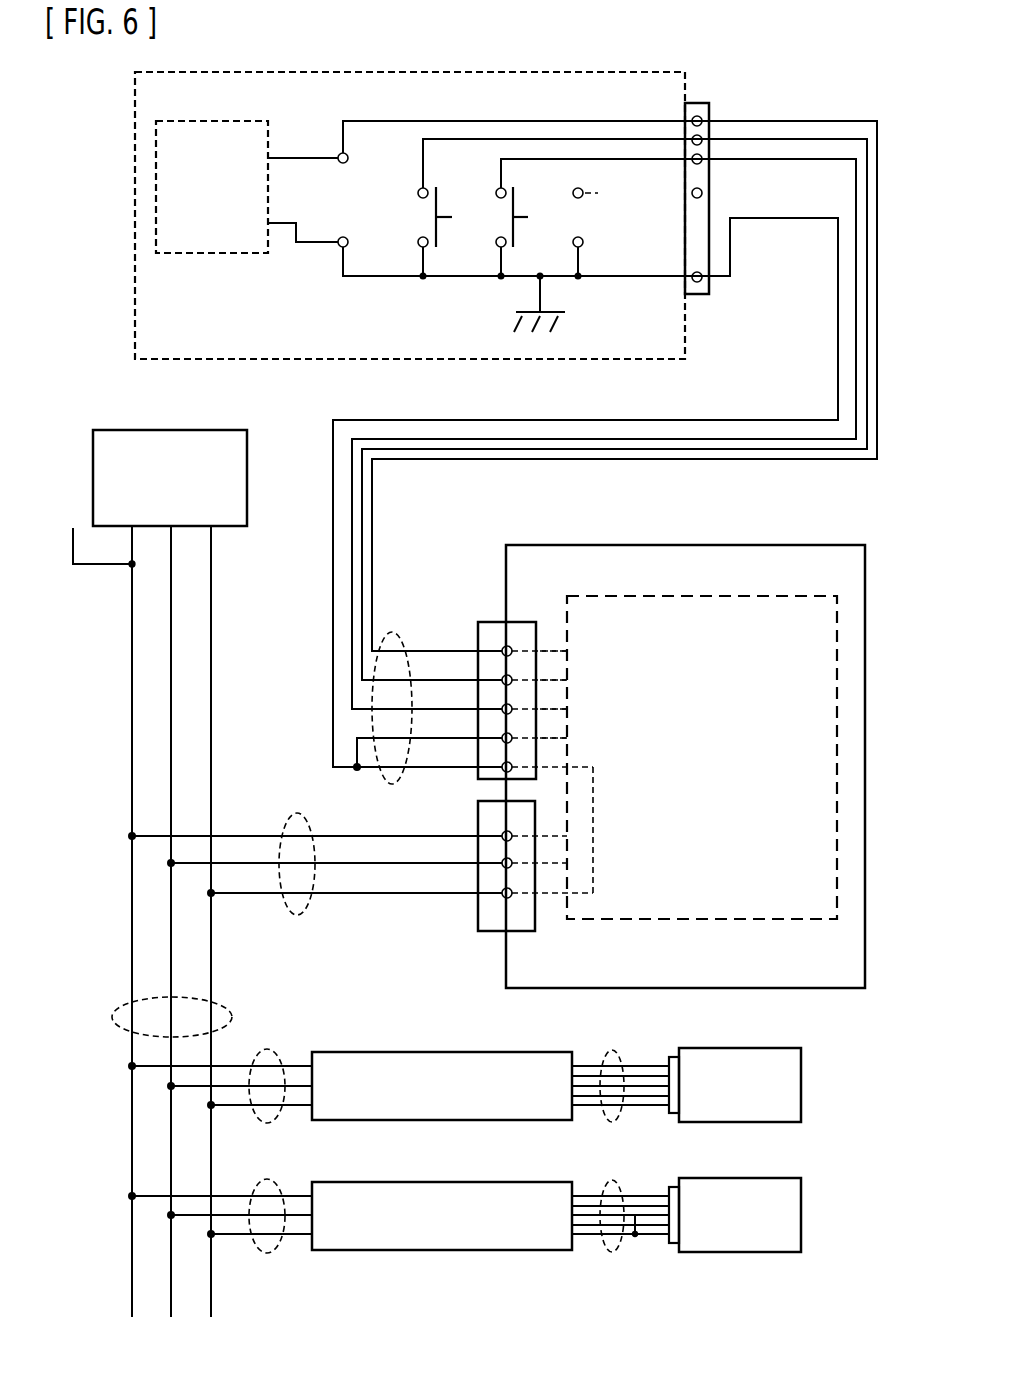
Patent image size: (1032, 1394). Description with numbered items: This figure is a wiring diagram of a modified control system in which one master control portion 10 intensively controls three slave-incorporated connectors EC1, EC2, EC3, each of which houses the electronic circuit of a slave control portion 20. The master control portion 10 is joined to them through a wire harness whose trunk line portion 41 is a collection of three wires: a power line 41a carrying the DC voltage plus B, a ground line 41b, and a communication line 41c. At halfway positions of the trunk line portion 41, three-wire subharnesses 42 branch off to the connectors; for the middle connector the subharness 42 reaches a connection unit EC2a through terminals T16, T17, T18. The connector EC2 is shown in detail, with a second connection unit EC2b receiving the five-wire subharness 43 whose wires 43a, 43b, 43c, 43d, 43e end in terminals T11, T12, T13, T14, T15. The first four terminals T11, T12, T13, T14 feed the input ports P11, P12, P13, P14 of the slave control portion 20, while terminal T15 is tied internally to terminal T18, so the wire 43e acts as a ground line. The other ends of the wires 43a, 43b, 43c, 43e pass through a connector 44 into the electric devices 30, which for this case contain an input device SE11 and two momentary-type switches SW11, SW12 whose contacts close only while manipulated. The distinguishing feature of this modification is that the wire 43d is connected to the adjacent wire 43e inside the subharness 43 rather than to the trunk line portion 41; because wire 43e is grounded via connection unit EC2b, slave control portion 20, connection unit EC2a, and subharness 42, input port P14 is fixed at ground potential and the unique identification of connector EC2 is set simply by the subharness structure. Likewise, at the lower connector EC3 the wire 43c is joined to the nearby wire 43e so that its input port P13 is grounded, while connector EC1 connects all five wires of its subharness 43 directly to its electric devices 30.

The electric devices 30 is at (628, 72).
The input device SE11 is at (242, 255).
The switch SW11 is at (421, 188).
The switch SW12 is at (499, 188).
The connector 44 is at (699, 297).
The wire 43a is at (457, 461).
The wire 43b is at (514, 450).
The wire 43c is at (570, 441).
The wire 43d is at (357, 751).
The wire 43e is at (598, 420).
The slave-incorporated connector EC2 is at (681, 545).
The slave control portion 20 is at (755, 595).
The connection unit EC2b is at (522, 622).
The terminal T11 is at (502, 651).
The terminal T12 is at (502, 680).
The terminal T13 is at (502, 709).
The terminal T14 is at (502, 738).
The terminal T15 is at (502, 767).
The input port P11 is at (579, 652).
The input port P12 is at (579, 681).
The input port P13 is at (579, 710).
The input port P14 is at (579, 739).
The connection unit EC2a is at (490, 932).
The terminal T16 is at (502, 836).
The terminal T17 is at (502, 863).
The terminal T18 is at (502, 893).
The master control portion 10 is at (160, 430).
The power line 41a is at (131, 679).
The ground line 41b is at (213, 625).
The communication line 41c is at (171, 577).
The trunk line portion 41 is at (232, 1005).
The subharness 42 is at (300, 916).
The slave-incorporated connector EC1 is at (443, 1052).
The slave-incorporated connector EC3 is at (443, 1182).
The subharness 43 is at (393, 632).